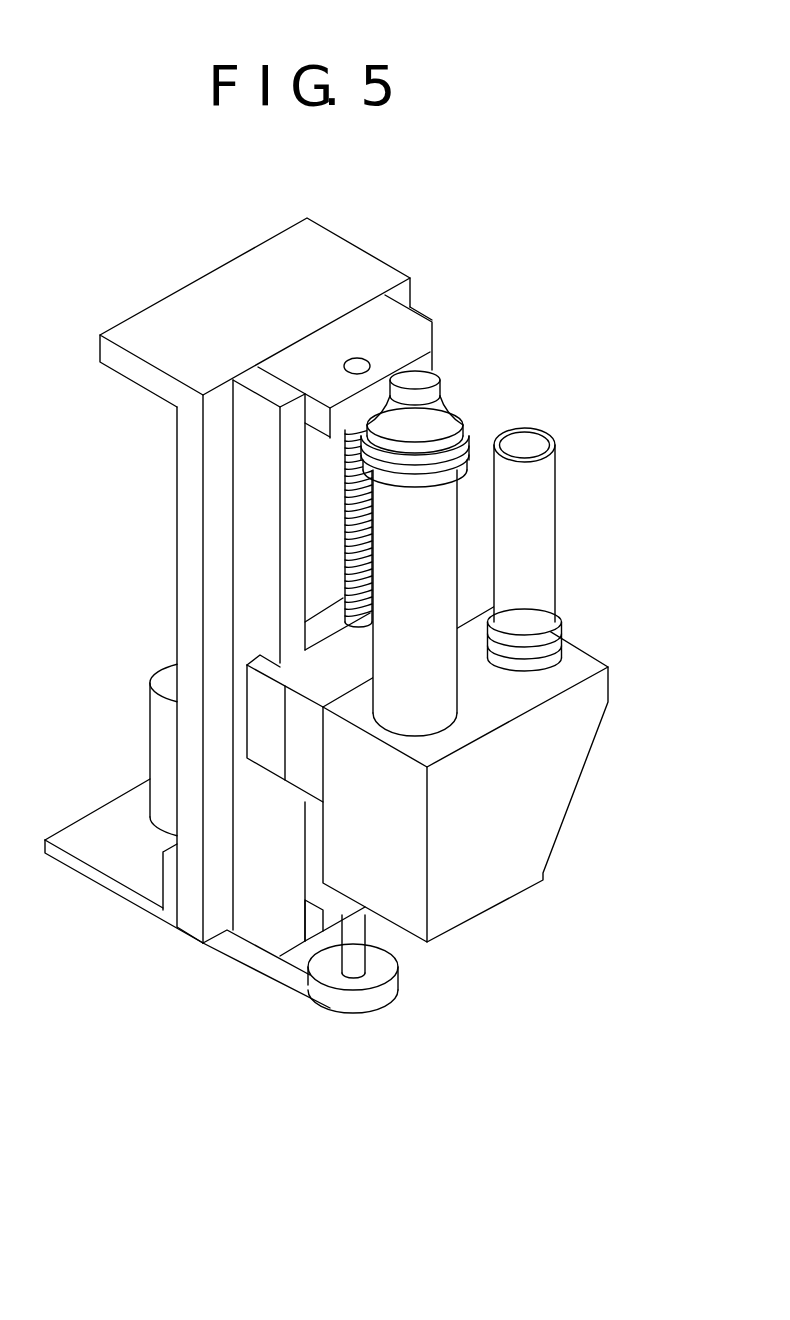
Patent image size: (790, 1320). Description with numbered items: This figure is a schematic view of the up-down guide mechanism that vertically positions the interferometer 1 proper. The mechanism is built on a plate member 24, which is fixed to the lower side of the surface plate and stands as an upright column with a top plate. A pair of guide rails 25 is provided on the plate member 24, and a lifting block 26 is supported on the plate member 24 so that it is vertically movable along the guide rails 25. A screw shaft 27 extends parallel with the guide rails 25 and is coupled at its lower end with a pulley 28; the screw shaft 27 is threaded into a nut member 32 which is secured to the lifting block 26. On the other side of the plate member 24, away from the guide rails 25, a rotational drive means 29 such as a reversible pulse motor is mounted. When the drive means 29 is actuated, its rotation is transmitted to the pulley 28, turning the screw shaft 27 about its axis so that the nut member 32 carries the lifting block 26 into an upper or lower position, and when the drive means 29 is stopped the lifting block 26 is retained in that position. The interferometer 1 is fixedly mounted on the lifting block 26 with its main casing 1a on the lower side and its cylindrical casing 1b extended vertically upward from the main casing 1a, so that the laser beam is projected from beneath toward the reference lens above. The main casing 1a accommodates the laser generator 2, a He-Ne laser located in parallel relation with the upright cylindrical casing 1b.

The interferometer 1 is at (487, 682).
The main casing 1a is at (567, 785).
The cylindrical casing 1b is at (460, 503).
The laser generator 2 is at (557, 515).
The plate member 24 is at (183, 462).
The guide rails 25 is at (260, 928).
The lifting block 26 is at (293, 740).
The screw shaft 27 is at (347, 512).
The pulley 28 is at (367, 988).
The rotational drive means 29 is at (157, 780).
The nut member 32 is at (330, 603).